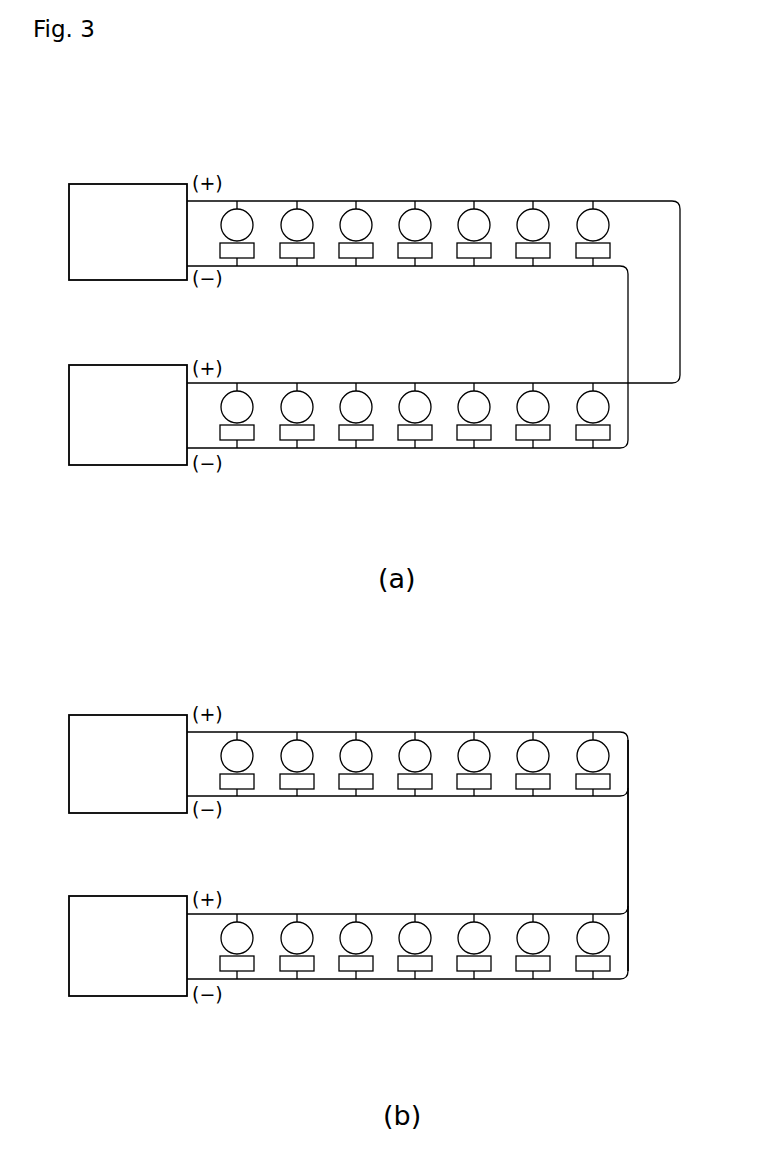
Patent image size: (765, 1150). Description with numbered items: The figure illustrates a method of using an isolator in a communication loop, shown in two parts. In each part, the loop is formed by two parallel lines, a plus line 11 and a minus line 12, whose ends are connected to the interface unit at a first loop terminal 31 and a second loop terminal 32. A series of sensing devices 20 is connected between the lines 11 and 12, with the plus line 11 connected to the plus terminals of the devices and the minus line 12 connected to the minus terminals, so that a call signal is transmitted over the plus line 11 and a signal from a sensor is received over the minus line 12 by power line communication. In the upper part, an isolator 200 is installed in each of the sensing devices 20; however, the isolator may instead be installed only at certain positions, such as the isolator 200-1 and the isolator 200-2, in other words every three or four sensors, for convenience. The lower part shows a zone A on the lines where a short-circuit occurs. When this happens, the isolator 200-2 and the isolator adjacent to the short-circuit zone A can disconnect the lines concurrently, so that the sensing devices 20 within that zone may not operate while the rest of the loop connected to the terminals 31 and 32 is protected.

The loop 1-A terminal 31 is at (127, 183).
The loop 1-B terminal 32 is at (127, 467).
The plus line 11 is at (400, 201).
The minus line 12 is at (384, 268).
The sensing device 20 is at (241, 217).
The isolator 200 is at (590, 258).
The isolator 200-1 is at (245, 257).
The isolator 200-2 is at (482, 258).
The zone A is at (630, 855).